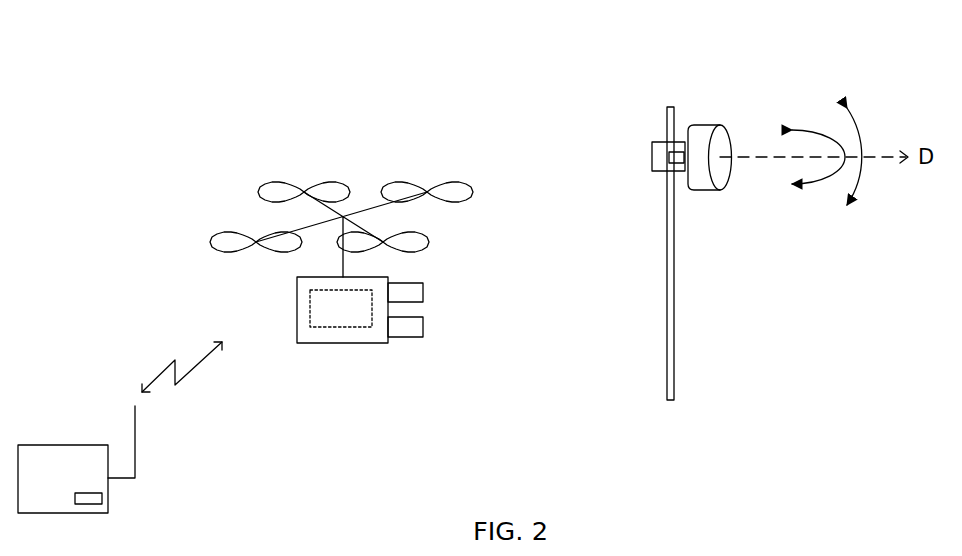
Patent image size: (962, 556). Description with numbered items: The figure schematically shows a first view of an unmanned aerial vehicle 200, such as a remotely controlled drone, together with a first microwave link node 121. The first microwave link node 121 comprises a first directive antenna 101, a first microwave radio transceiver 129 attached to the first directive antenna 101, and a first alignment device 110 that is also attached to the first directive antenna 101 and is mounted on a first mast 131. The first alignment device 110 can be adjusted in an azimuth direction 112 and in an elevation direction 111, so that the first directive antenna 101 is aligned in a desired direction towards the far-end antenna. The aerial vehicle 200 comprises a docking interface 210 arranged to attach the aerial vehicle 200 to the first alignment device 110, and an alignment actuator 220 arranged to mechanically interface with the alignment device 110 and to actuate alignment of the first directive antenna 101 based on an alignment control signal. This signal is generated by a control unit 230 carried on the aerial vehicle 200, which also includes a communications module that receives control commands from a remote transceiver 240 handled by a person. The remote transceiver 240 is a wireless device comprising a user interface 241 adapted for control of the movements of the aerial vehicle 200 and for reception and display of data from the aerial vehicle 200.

The unmanned aerial vehicle 200 is at (425, 143).
The control unit 230 is at (363, 320).
The docking interface 210 is at (425, 290).
The alignment actuator 220 is at (423, 338).
The remote transceiver 240 is at (115, 459).
The user interface 241 is at (97, 500).
The first microwave link node 121 is at (631, 81).
The first mast 131 is at (668, 313).
The first alignment device 110 is at (652, 150).
The first microwave radio transceiver 129 is at (677, 163).
The first directive antenna 101 is at (705, 138).
The elevation direction 111 is at (862, 180).
The azimuth direction 112 is at (815, 182).